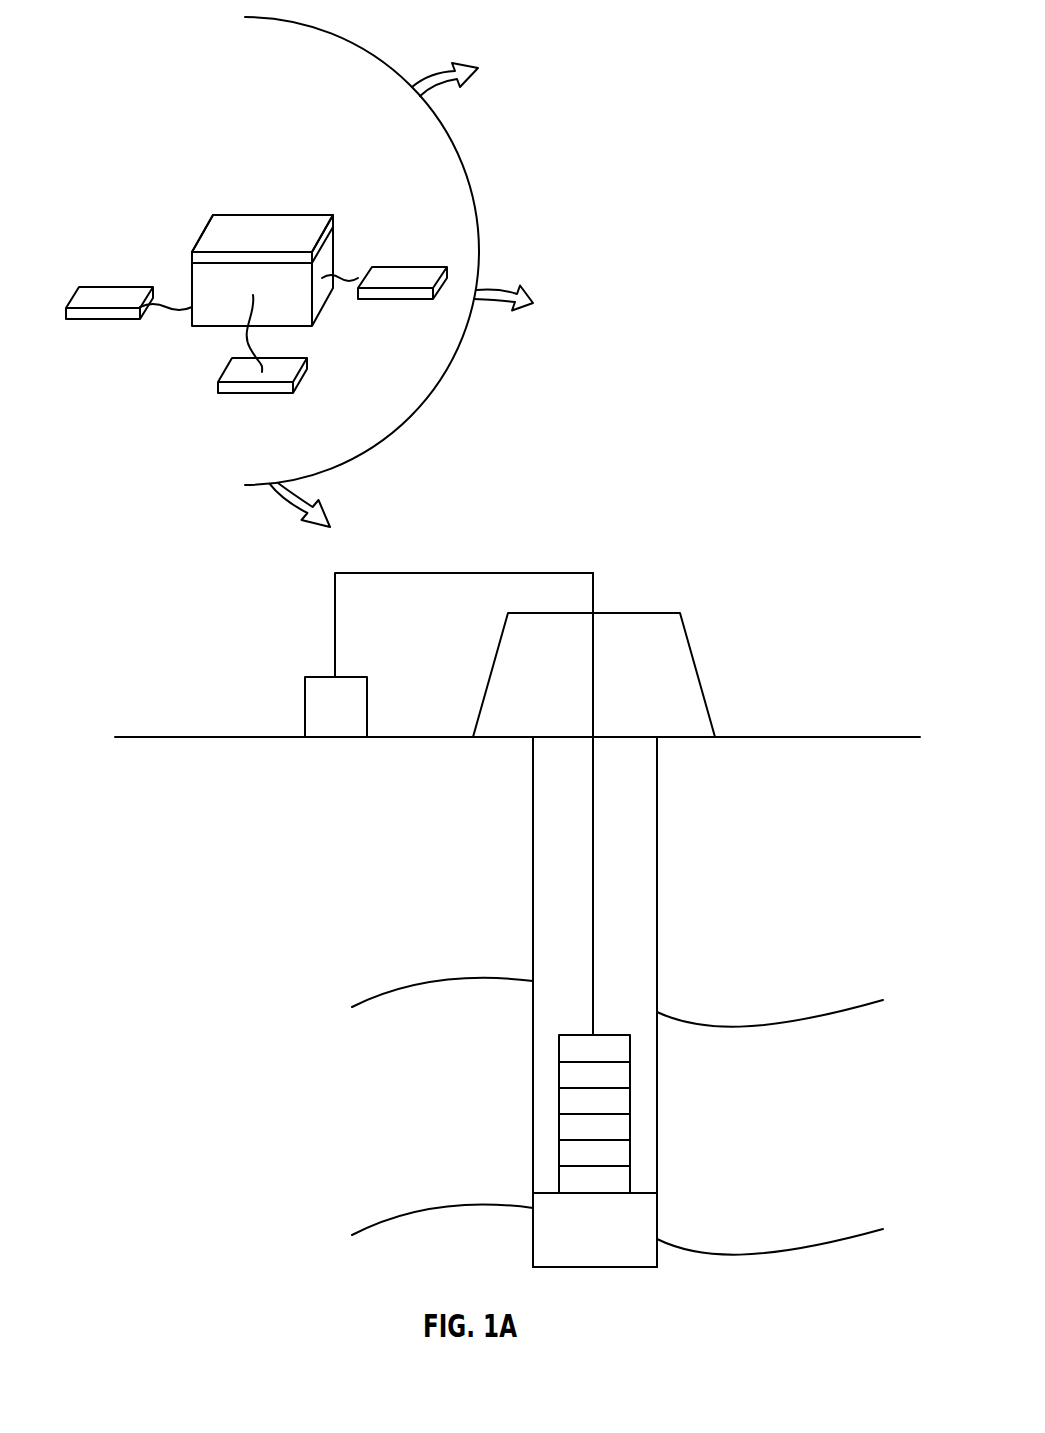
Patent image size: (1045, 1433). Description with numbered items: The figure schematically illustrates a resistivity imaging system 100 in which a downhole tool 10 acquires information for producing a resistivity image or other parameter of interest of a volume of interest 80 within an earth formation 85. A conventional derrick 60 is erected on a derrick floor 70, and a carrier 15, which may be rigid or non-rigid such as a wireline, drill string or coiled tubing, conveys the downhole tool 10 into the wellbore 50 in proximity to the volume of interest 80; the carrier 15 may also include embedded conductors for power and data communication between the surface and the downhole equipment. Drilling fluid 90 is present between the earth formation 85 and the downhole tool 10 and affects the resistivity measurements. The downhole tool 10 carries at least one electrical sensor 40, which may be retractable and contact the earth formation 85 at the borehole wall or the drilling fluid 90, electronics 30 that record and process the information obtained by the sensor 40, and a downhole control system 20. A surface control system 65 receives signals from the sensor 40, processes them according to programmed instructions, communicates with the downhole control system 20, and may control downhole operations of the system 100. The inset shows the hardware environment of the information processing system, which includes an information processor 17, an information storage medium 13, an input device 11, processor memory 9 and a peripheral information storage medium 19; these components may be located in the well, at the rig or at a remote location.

The resistivity imaging system 100 is at (730, 516).
The processor memory 9 is at (327, 255).
The information processor 17 is at (262, 233).
The peripheral information storage medium 19 is at (110, 297).
The input device 11 is at (403, 277).
The information storage medium 13 is at (218, 387).
The surface control system 65 is at (348, 677).
The derrick 60 is at (700, 677).
The derrick floor 70 is at (508, 730).
The carrier 15 is at (593, 852).
The wellbore 50 is at (657, 895).
The earth formation 85 is at (787, 777).
The volume of interest of the earth formation 80 is at (803, 1131).
The downhole tool 10 is at (643, 1085).
The downhole control system 20 is at (558, 1072).
The electronics 30 is at (558, 1125).
The electrical sensor 40 is at (628, 1153).
The drilling fluid 90 is at (641, 1216).